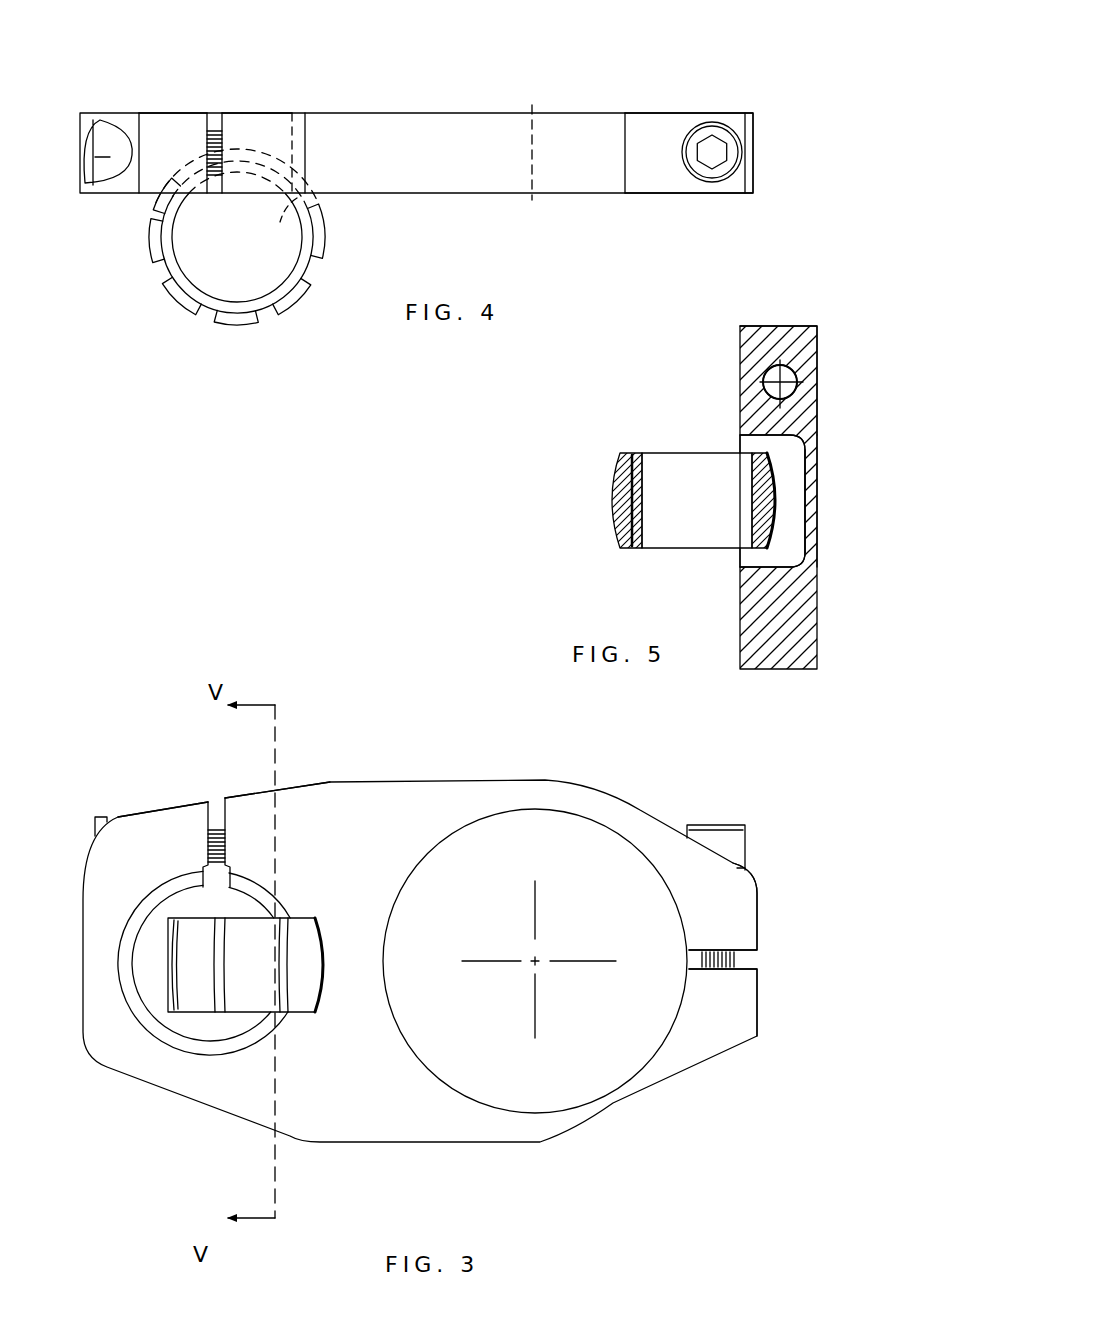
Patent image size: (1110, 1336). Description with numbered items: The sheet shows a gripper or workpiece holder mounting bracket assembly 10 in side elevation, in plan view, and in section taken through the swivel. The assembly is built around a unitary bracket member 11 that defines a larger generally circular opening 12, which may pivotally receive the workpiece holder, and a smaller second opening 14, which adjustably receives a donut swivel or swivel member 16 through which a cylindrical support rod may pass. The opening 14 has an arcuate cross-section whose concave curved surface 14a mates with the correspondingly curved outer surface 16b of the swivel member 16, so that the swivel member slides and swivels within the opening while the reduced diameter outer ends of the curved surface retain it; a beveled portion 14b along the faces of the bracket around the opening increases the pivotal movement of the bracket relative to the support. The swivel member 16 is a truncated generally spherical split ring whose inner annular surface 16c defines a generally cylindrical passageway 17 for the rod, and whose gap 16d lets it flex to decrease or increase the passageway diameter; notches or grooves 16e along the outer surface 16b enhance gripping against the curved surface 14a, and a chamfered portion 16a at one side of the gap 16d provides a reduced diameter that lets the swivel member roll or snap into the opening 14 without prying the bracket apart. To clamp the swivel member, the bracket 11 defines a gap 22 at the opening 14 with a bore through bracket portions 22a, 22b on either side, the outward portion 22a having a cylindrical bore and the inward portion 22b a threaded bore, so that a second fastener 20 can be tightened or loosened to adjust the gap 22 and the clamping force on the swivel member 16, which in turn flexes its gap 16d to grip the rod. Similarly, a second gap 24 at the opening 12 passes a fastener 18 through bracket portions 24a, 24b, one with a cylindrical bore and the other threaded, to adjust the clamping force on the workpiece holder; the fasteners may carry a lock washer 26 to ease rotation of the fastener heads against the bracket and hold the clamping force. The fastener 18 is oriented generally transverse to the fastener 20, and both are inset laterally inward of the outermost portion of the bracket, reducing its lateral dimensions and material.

In FIG. 4, the mounting bracket assembly 10 is at (443, 78).
In FIG. 5, the mounting bracket assembly 10 is at (680, 360).
In FIG. 3, the mounting bracket assembly 10 is at (423, 738).
In FIG. 4, the bracket member 11 is at (467, 130).
In FIG. 5, the bracket member 11 is at (770, 672).
In FIG. 3, the bracket member 11 is at (410, 1150).
In FIG. 3, the circular opening 12 is at (600, 1090).
In FIG. 5, the second circular opening 14 is at (797, 468).
In FIG. 3, the second circular opening 14 is at (212, 1030).
In FIG. 5, the curved surface 14a is at (806, 540).
In FIG. 5, the beveled portion 14b is at (812, 500).
In FIG. 3, the beveled portion 14b is at (152, 1033).
In FIG. 4, the swivel member 16 is at (190, 322).
In FIG. 3, the swivel member 16 is at (330, 922).
In FIG. 4, the chamfered portion 16a is at (293, 112).
In FIG. 4, the outer curved surface 16b is at (250, 324).
In FIG. 5, the outer curved surface 16b is at (610, 520).
In FIG. 3, the outer curved surface 16b is at (322, 1006).
In FIG. 4, the inner annular surface 16c is at (203, 290).
In FIG. 5, the inner annular surface 16c is at (660, 537).
In FIG. 4, the gap 16d is at (293, 212).
In FIG. 4, the notches 16e is at (326, 260).
In FIG. 4, the cylindrical passageway 17 is at (232, 255).
In FIG. 5, the cylindrical passageway 17 is at (690, 433).
In FIG. 4, the fastener 18 is at (712, 165).
In FIG. 3, the fastener 18 is at (748, 830).
In FIG. 4, the second fastener 20 is at (85, 186).
In FIG. 5, the second fastener 20 is at (782, 372).
In FIG. 3, the second fastener 20 is at (103, 818).
In FIG. 4, the gap 22 is at (215, 122).
In FIG. 3, the gap 22 is at (216, 805).
In FIG. 4, the outward bracket portion 22a is at (185, 125).
In FIG. 3, the outward bracket portion 22a is at (180, 832).
In FIG. 4, the inward bracket portion 22b is at (245, 125).
In FIG. 5, the inward bracket portion 22b is at (808, 355).
In FIG. 3, the inward bracket portion 22b is at (250, 808).
In FIG. 3, the second gap 24 is at (760, 960).
In FIG. 4, the bracket portion 24a is at (733, 120).
In FIG. 3, the bracket portion 24a is at (758, 907).
In FIG. 3, the bracket portion 24b is at (760, 987).
In FIG. 3, the lock washer 26 is at (745, 868).